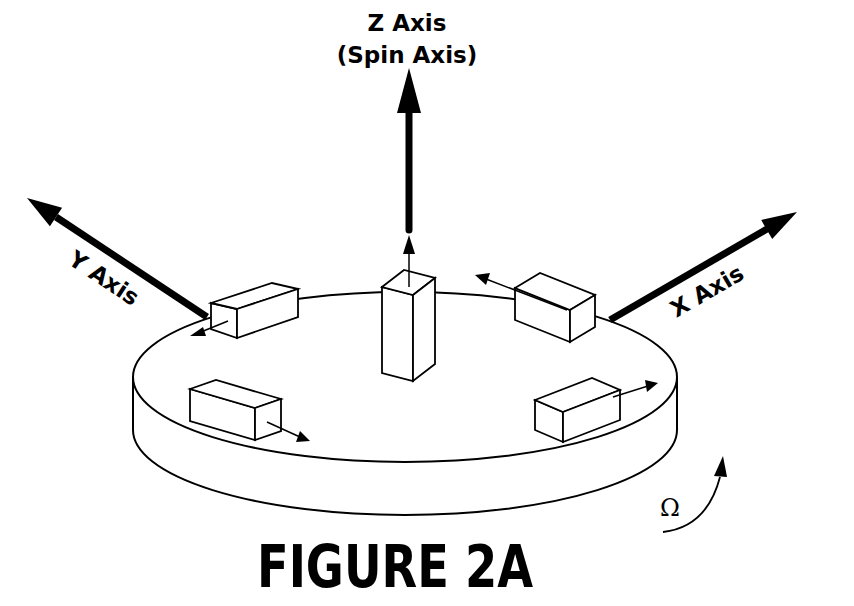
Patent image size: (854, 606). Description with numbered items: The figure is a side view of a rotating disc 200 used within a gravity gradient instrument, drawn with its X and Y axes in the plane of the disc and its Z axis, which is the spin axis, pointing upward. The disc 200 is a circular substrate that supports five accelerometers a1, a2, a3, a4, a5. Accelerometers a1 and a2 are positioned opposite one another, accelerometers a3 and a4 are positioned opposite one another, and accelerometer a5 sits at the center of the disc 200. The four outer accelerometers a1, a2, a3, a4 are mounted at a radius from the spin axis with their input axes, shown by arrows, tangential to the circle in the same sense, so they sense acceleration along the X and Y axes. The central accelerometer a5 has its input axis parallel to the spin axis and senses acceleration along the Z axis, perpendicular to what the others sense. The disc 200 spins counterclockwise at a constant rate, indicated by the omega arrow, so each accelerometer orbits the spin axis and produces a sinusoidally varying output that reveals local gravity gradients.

The rotating disc 200 is at (167, 457).
The accelerometer a1 is at (535, 307).
The accelerometer a2 is at (250, 411).
The accelerometer a3 is at (244, 310).
The accelerometer a4 is at (596, 410).
The accelerometer a5 is at (408, 308).